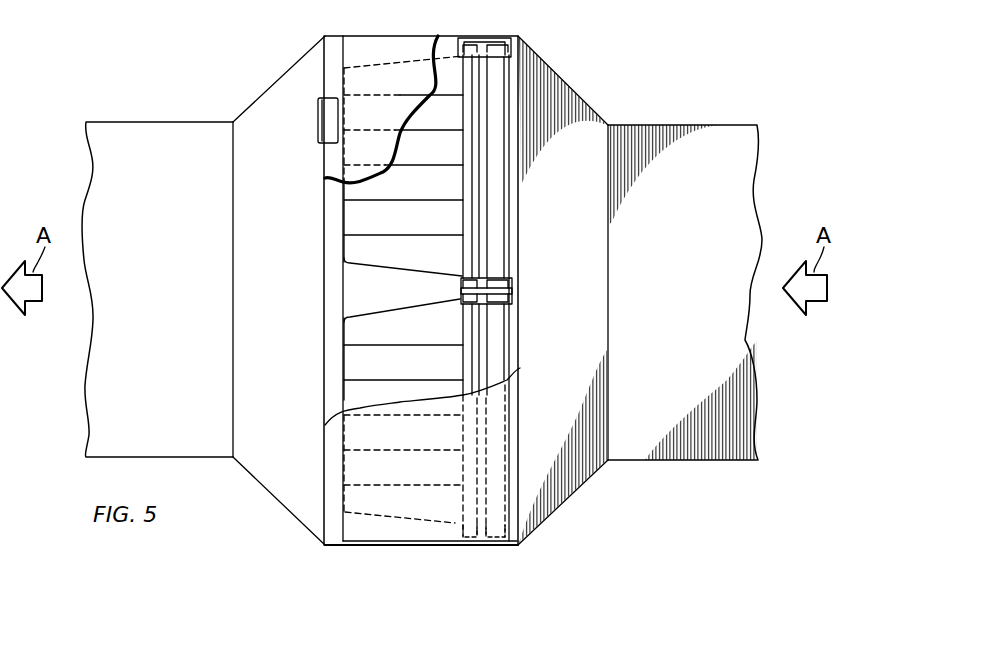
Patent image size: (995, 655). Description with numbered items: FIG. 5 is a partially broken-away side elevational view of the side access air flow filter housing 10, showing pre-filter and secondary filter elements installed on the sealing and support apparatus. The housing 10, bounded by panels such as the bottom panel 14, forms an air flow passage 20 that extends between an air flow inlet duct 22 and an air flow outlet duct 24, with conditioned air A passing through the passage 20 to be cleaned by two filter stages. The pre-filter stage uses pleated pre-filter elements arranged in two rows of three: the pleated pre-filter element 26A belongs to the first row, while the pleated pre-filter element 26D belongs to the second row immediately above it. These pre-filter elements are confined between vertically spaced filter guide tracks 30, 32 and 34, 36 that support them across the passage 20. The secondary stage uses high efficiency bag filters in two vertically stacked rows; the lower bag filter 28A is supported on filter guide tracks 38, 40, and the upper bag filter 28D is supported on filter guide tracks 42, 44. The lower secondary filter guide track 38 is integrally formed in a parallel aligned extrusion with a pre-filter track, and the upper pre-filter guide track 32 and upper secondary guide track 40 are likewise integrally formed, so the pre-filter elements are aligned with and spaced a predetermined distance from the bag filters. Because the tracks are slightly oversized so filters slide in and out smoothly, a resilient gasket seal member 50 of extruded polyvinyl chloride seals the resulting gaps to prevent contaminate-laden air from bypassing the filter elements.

The side access air flow filter housing 10 is at (196, 95).
The bottom panel 14 is at (348, 37).
The air flow passage 20 is at (372, 301).
The air flow inlet duct 22 is at (738, 125).
The air flow outlet duct 24 is at (115, 122).
The pleated pre-filter element 26A is at (500, 330).
The pleated pre-filter element 26D is at (503, 58).
The bag filter 28A is at (350, 362).
The bag filter 28D is at (350, 214).
The filter guide track 30 is at (520, 540).
The upper pre-filter guide track 32 is at (512, 296).
The filter guide track 34 is at (512, 283).
The filter guide track 36 is at (500, 45).
The lower secondary filter guide track 38 is at (452, 530).
The upper secondary guide track 40 is at (462, 300).
The filter guide track 42 is at (460, 284).
The filter guide track 44 is at (468, 46).
The resilient gasket seal member 50 is at (489, 218).